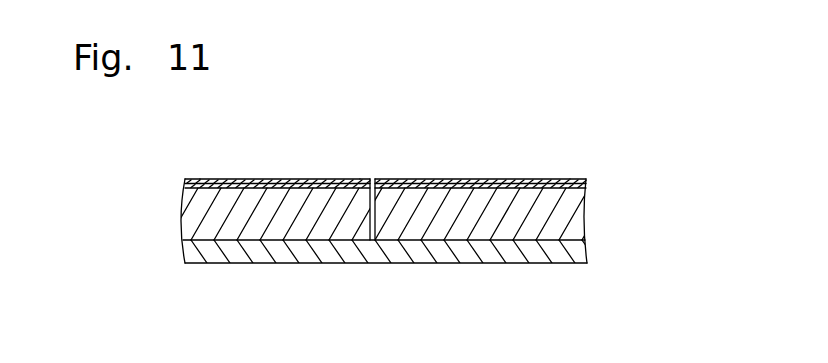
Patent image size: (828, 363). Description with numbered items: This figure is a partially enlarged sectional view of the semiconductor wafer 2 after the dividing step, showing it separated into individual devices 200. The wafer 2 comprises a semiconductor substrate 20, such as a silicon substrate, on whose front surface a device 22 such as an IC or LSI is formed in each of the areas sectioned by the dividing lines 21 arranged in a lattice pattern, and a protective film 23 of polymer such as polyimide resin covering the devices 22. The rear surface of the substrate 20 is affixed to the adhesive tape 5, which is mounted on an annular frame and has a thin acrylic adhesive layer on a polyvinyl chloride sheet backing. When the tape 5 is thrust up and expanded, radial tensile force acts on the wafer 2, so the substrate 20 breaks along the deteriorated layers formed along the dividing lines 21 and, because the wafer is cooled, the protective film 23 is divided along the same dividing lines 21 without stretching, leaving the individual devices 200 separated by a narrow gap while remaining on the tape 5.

The semiconductor wafer 2 is at (385, 137).
The adhesive tape 5 is at (462, 252).
The semiconductor substrate 20 is at (586, 214).
The dividing lines 21 is at (372, 178).
The device 22 is at (248, 178).
The protective film 23 is at (363, 178).
The individual devices 200 is at (269, 178).